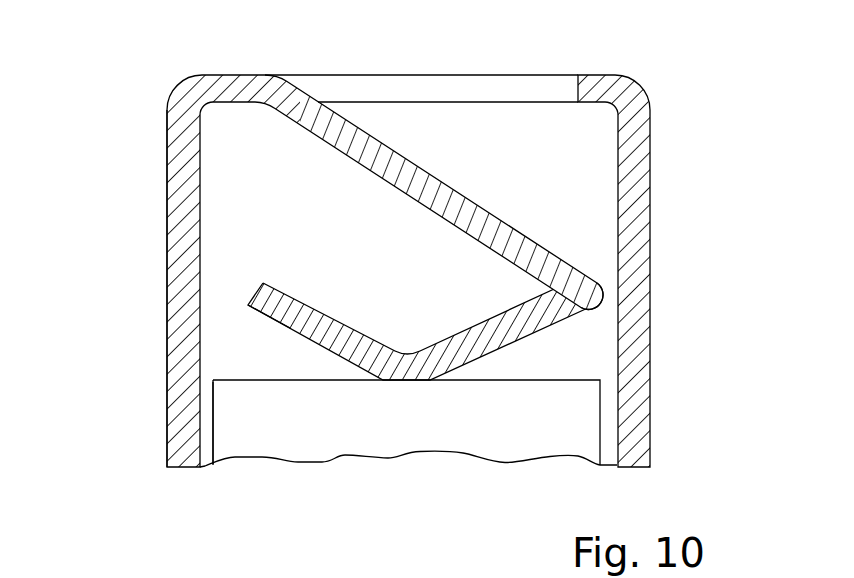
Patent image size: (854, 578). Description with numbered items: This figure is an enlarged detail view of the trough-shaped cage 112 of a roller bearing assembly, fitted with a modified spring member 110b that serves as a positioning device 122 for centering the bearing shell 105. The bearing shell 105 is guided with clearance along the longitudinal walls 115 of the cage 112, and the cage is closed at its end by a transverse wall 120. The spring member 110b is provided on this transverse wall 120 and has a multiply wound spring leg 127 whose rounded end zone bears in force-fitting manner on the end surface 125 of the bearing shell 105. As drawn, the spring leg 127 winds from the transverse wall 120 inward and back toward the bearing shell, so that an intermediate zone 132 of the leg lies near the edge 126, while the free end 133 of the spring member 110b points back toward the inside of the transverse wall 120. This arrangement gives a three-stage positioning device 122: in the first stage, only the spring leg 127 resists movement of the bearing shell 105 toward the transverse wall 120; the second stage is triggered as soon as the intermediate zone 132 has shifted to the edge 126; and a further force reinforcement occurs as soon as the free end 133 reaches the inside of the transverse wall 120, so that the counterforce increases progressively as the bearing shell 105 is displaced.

The bearing shell 105 is at (414, 437).
The spring member 110b is at (521, 201).
The cage 112 is at (190, 90).
The longitudinal walls 115 is at (168, 267).
The transverse wall 120 is at (333, 75).
The positioning device 122 is at (301, 234).
The end surface 125 is at (240, 379).
The edge 126 is at (602, 75).
The spring leg 127 is at (540, 246).
The intermediate zone 132 is at (600, 287).
The free end 133 is at (257, 293).